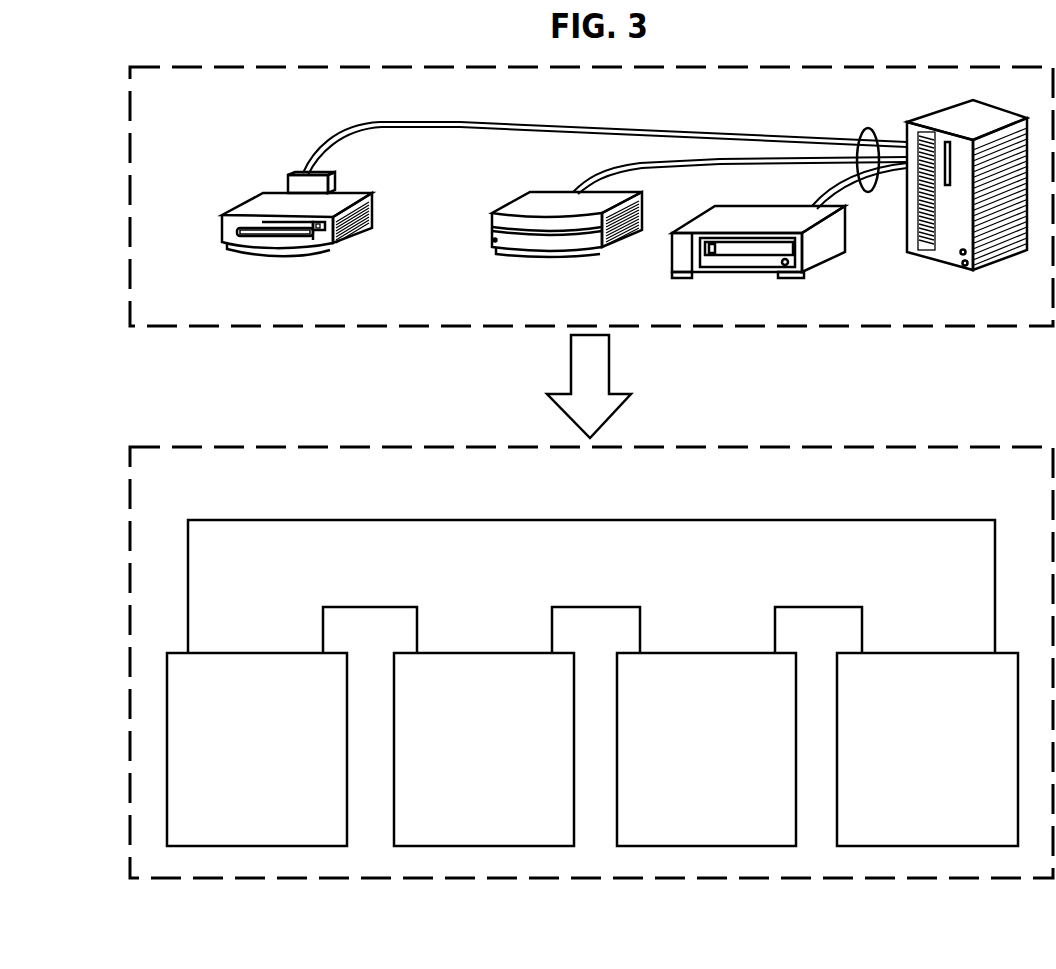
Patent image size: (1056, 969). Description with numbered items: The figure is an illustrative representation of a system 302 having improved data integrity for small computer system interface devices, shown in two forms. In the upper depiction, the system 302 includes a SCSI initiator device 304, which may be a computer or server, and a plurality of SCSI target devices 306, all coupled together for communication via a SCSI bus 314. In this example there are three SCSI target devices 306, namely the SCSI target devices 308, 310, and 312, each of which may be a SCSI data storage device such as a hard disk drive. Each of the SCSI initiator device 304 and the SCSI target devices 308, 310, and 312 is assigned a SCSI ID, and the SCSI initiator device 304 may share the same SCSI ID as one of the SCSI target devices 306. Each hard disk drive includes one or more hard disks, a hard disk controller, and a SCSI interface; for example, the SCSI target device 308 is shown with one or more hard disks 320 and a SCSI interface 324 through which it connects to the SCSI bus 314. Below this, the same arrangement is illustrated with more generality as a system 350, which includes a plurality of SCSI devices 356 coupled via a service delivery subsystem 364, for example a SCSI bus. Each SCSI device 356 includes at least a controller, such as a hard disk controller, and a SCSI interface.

The system 302 is at (805, 67).
The SCSI initiator device 304 is at (963, 268).
The SCSI target devices 306 is at (220, 133).
The SCSI target device 308 is at (247, 253).
The SCSI target device 310 is at (517, 255).
The SCSI target device 312 is at (708, 272).
The SCSI bus 314 is at (870, 128).
The hard disks 320 is at (265, 233).
The SCSI interface 324 is at (297, 173).
The system 350 is at (910, 447).
The SCSI devices 356 is at (157, 548).
The service delivery subsystem 364 is at (757, 520).